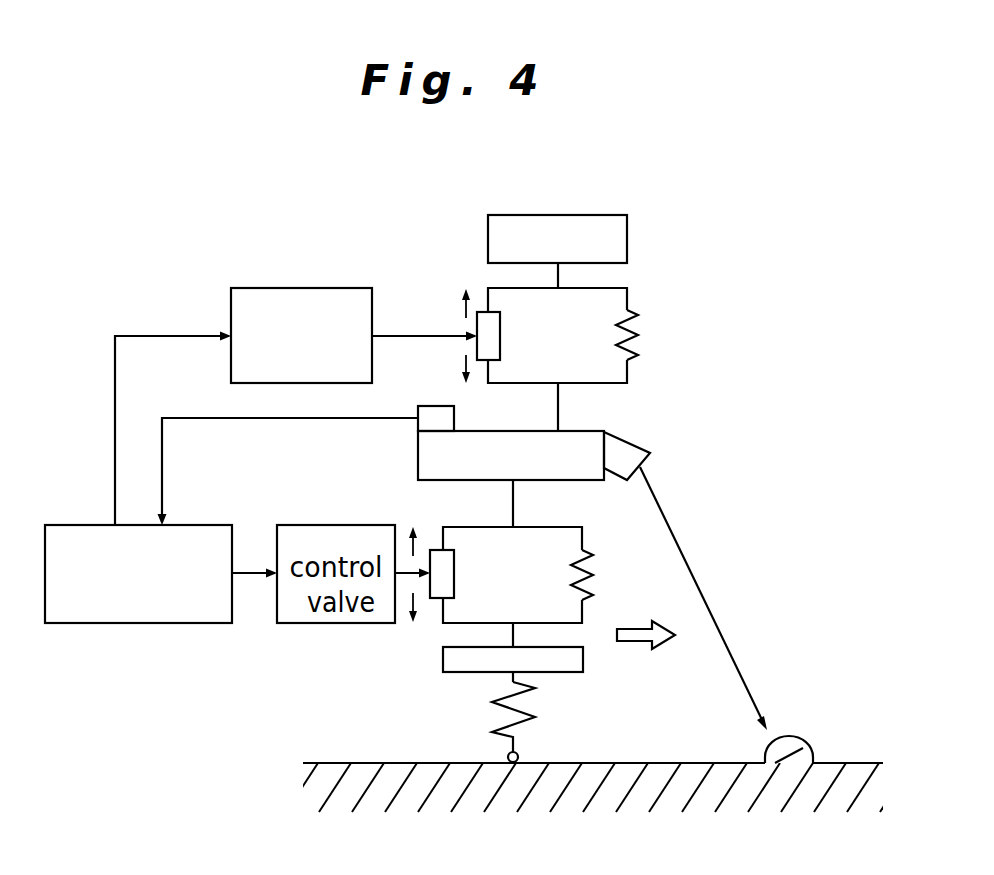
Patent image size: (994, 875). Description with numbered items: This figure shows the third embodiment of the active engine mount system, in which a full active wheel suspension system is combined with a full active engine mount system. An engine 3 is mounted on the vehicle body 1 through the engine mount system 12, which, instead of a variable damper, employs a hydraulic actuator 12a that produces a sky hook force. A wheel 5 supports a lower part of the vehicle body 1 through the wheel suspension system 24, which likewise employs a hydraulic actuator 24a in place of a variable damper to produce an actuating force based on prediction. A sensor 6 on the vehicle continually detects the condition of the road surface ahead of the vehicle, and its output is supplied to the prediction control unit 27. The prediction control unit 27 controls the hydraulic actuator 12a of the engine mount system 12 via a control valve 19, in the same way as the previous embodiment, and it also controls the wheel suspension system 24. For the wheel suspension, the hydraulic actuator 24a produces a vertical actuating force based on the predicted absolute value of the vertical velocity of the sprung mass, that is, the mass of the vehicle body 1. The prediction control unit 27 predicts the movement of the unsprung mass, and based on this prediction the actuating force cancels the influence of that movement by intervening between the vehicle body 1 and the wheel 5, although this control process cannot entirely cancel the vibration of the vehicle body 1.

The vehicle body 1 is at (418, 460).
The engine 3 is at (572, 215).
The wheel 5 is at (427, 682).
The sensor 6 is at (630, 443).
The engine mount system 12 is at (598, 321).
The hydraulic actuator 12a is at (500, 338).
The control valve 19 is at (319, 287).
The wheel suspension system 24 is at (462, 608).
The hydraulic actuator 24a is at (454, 576).
The prediction control unit 27 is at (167, 623).